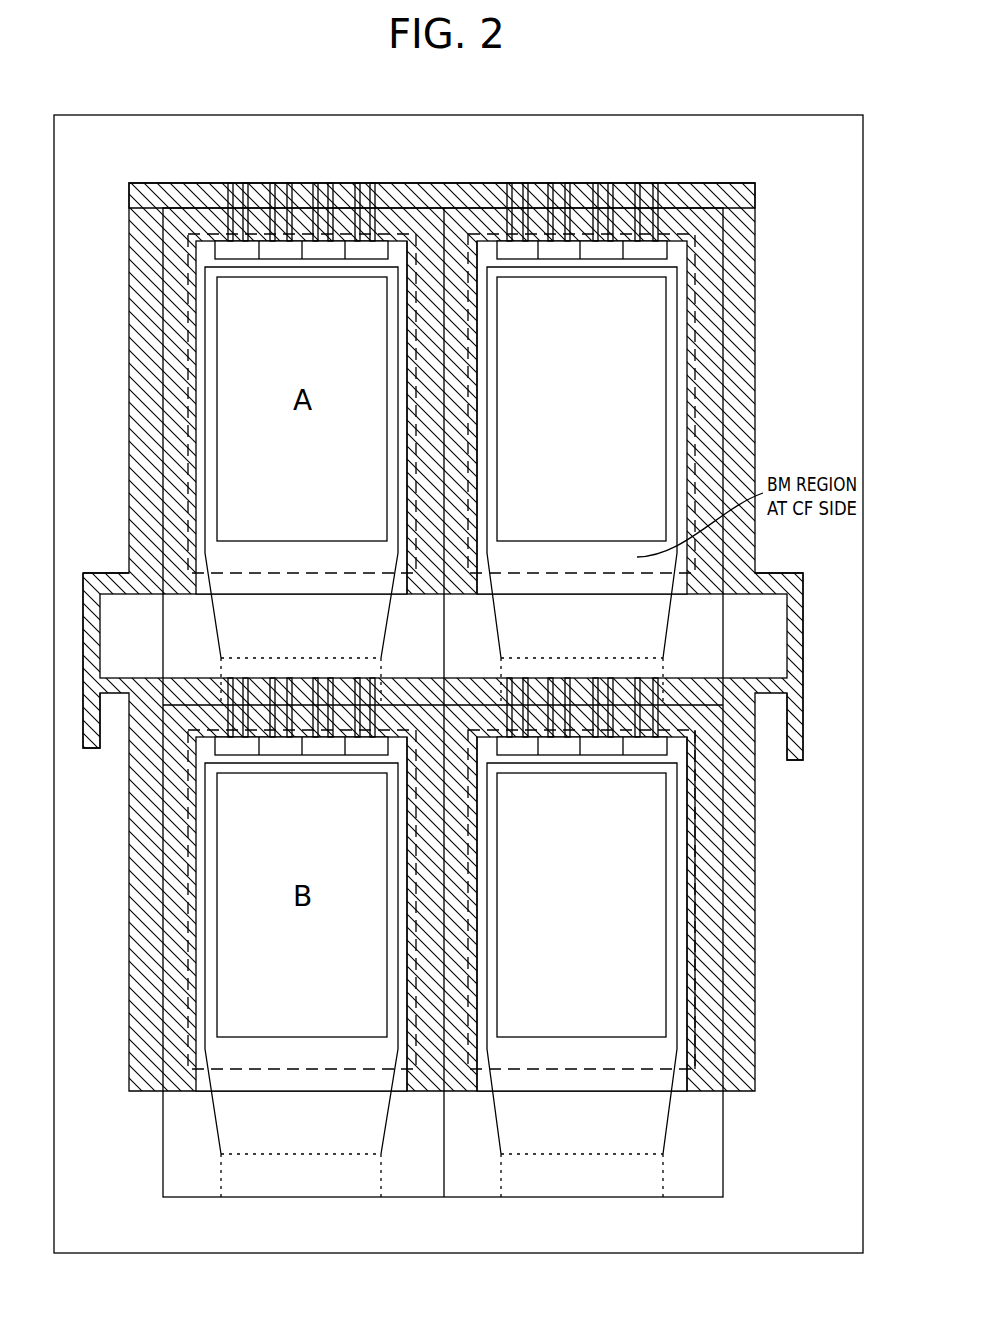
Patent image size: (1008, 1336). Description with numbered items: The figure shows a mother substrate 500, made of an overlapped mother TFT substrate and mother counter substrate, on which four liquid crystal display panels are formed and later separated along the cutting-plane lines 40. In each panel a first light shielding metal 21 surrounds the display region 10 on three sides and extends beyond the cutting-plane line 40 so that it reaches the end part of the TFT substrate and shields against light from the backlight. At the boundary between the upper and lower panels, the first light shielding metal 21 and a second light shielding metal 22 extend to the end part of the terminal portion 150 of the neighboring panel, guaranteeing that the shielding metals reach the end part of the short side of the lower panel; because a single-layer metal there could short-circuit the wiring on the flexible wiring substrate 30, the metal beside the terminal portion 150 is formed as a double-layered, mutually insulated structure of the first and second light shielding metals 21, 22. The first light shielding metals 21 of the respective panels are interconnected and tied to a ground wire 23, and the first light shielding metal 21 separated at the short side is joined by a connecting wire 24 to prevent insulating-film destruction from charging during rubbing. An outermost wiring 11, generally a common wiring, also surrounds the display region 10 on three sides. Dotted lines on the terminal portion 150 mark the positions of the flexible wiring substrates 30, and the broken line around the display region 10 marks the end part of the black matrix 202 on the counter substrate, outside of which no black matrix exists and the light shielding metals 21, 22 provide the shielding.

The mother substrate 500 is at (108, 115).
The display region 10 is at (642, 925).
The outermost wiring 11 is at (207, 437).
The first light shielding metal 21 is at (740, 399).
The second light shielding metal 22 is at (645, 190).
The ground wire 23 is at (803, 683).
The connecting wire 24 is at (217, 747).
The flexible wiring substrate 30 is at (663, 1172).
The cutting-plane line 40 is at (427, 233).
The terminal portion 150 is at (705, 635).
The black matrix 202 is at (698, 830).